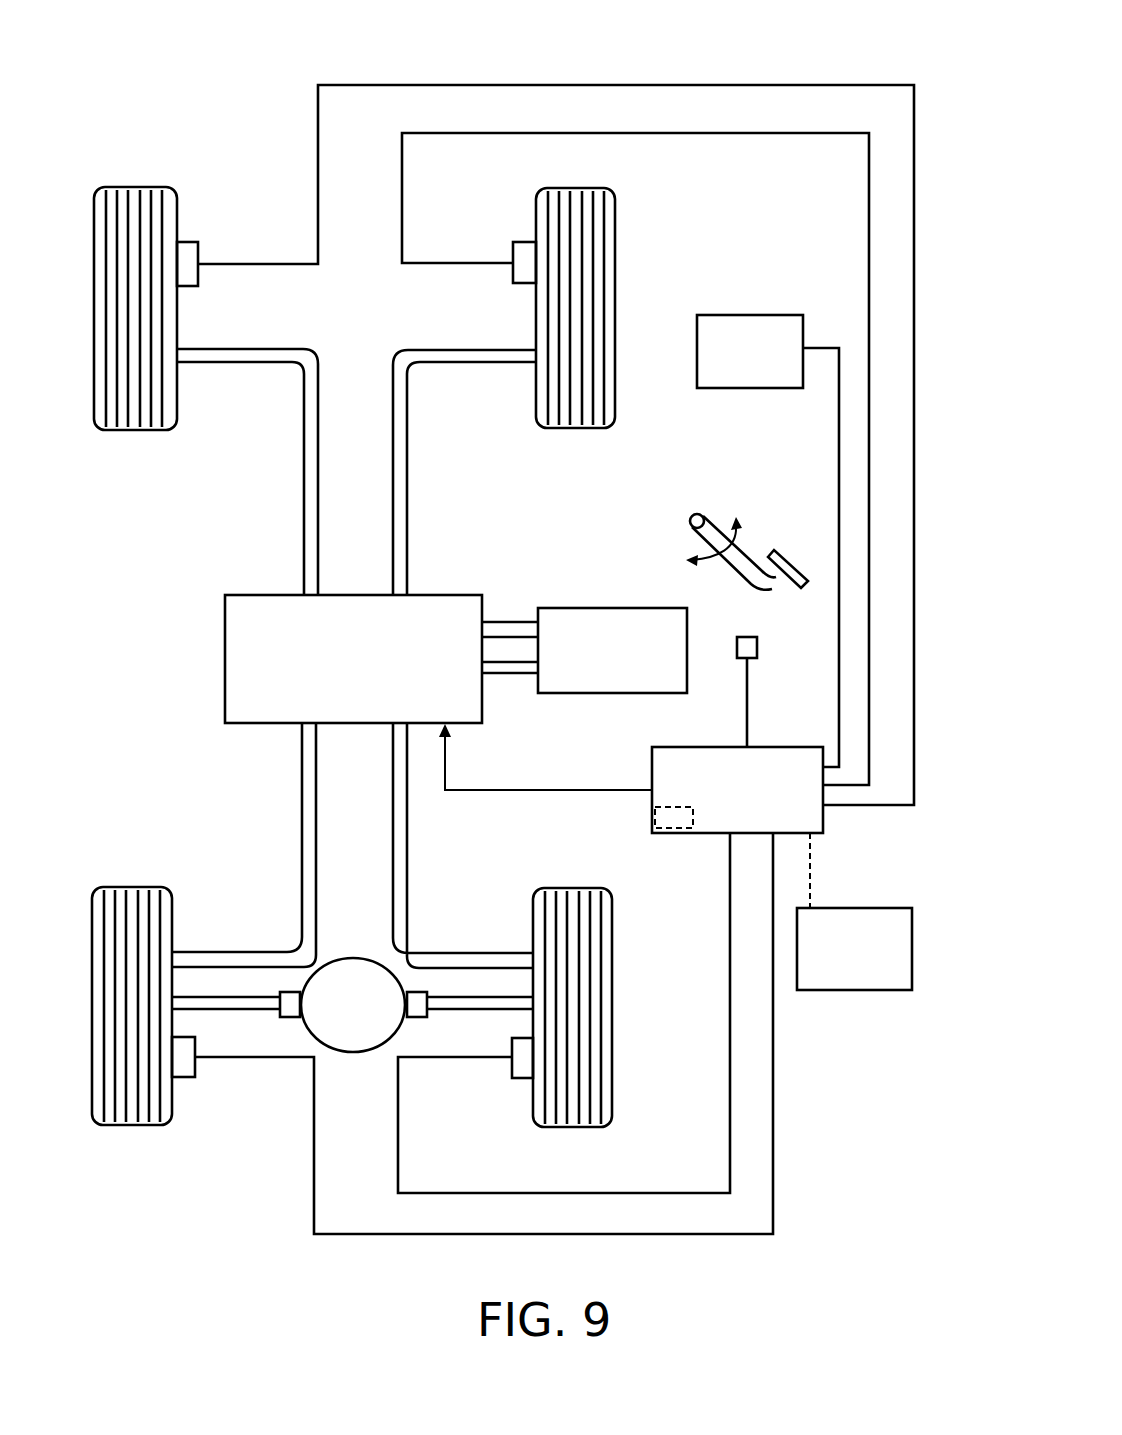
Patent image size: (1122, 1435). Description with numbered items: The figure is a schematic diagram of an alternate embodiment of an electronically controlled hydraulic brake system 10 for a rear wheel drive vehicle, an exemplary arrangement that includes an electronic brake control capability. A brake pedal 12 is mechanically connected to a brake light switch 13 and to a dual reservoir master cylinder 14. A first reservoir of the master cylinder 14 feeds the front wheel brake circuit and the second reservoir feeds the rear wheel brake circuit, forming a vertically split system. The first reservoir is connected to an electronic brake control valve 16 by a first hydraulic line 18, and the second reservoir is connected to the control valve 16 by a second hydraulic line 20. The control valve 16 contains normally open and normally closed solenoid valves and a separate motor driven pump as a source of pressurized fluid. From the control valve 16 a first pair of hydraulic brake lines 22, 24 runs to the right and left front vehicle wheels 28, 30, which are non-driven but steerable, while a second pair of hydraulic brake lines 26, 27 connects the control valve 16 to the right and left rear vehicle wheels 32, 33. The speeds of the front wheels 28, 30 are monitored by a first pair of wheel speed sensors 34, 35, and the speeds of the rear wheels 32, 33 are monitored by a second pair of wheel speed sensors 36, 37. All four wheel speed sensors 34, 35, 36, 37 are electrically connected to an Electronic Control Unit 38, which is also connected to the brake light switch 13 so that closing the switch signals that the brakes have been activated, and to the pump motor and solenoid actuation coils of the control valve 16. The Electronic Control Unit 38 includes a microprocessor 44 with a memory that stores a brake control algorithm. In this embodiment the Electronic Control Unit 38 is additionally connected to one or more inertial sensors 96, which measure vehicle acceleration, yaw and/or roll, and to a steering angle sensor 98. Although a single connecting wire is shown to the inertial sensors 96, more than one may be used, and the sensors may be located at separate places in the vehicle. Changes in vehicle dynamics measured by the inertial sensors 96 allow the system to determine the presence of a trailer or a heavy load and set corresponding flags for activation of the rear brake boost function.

The hydraulic brake system 10 is at (378, 71).
The brake pedal 12 is at (750, 556).
The brake light switch 13 is at (748, 637).
The dual reservoir master cylinder 14 is at (610, 608).
The electronic brake control valve 16 is at (225, 637).
The first hydraulic line 18 is at (500, 620).
The second hydraulic line 20 is at (518, 676).
The hydraulic brake line 22 is at (407, 460).
The hydraulic brake line 24 is at (304, 453).
The hydraulic brake line 26 is at (407, 820).
The hydraulic brake line 27 is at (302, 797).
The right front vehicle wheel 28 is at (615, 228).
The left front vehicle wheel 30 is at (136, 187).
The right rear vehicle wheel 32 is at (612, 915).
The left rear vehicle wheel 33 is at (130, 887).
The wheel speed sensor 34 is at (518, 242).
The wheel speed sensor 35 is at (198, 245).
The wheel speed sensor 36 is at (520, 1078).
The wheel speed sensor 37 is at (182, 1077).
The Electronic Control Unit 38 is at (775, 747).
The microprocessor 44 is at (673, 828).
The inertial sensors 96 is at (843, 991).
The steering angle sensor 98 is at (755, 314).